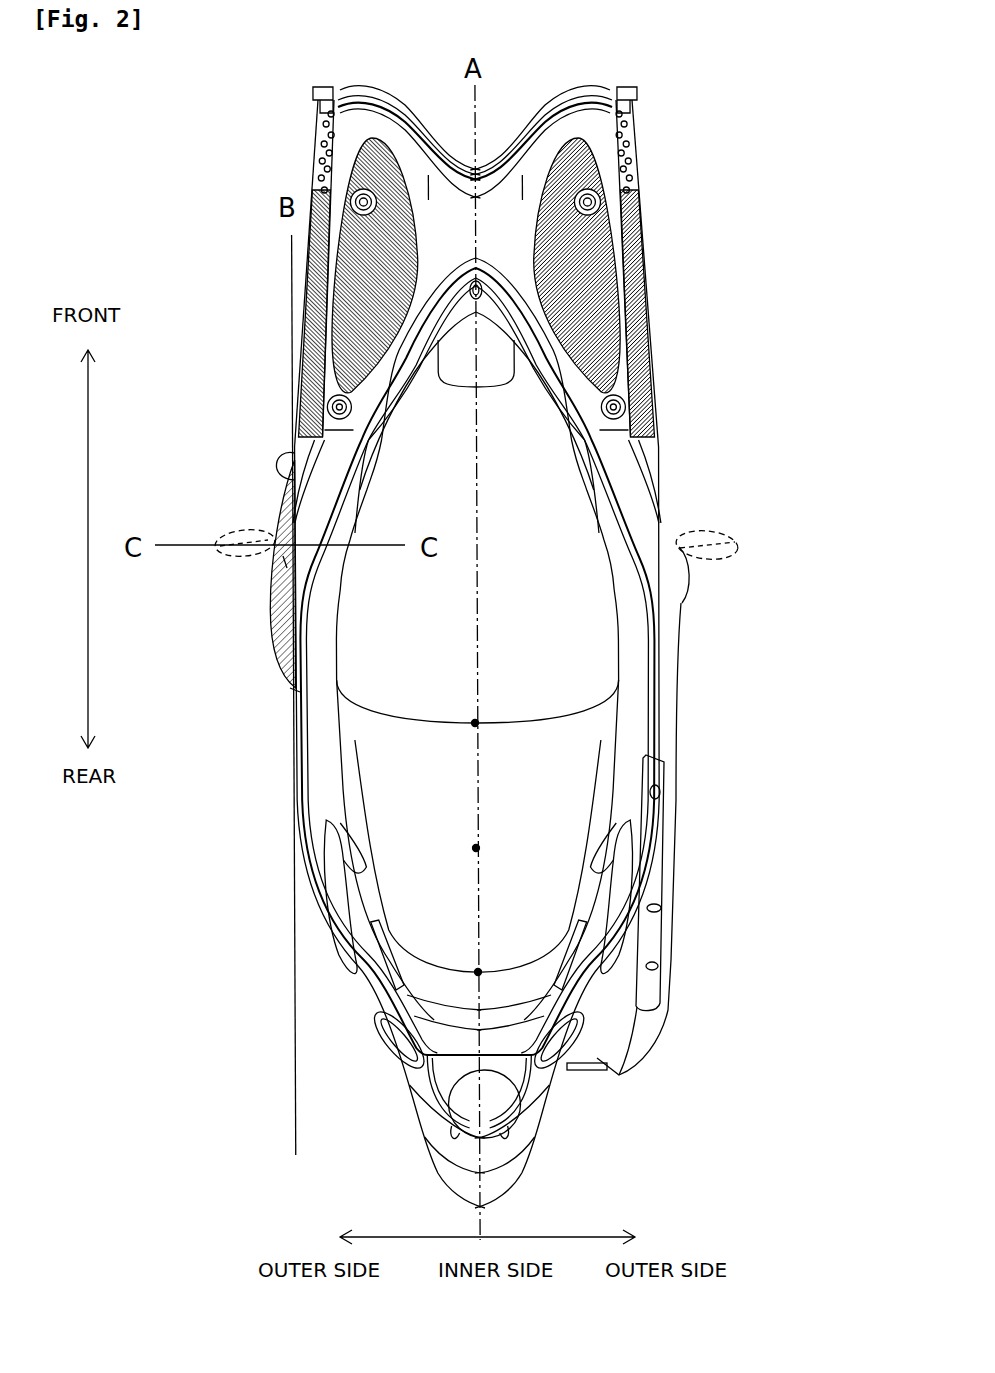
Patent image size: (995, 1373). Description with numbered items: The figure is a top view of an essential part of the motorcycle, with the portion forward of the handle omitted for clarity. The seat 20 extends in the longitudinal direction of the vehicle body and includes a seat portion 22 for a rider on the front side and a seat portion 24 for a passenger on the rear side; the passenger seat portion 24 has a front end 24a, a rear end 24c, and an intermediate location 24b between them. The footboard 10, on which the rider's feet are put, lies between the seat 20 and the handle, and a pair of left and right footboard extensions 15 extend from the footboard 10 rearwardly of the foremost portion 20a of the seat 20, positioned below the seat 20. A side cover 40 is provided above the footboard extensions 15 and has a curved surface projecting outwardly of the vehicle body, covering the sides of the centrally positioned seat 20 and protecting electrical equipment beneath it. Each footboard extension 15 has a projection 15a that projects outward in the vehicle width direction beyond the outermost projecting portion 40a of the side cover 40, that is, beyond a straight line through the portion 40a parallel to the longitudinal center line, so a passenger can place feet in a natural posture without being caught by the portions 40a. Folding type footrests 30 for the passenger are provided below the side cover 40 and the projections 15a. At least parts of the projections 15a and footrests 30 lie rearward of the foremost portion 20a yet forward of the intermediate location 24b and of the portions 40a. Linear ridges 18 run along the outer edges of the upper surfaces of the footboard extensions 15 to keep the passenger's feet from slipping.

The footboard 10 is at (640, 270).
The footboard extensions 15 is at (634, 492).
The projection 15a is at (283, 560).
The linear ridges 18 is at (277, 627).
The seat 20 is at (604, 644).
The foremost portion of seat 20a is at (475, 342).
The seat portion for a rider 22 is at (562, 628).
The seat portion for a passenger 24 is at (562, 758).
The front end of passenger seat portion 24a is at (475, 723).
The intermediate location of passenger seat portion 24b is at (476, 848).
The rear end of passenger seat portion 24c is at (478, 972).
The folding type footrests 30 is at (230, 537).
The side cover 40 is at (327, 788).
The outermost projecting portion of side cover 40a is at (290, 692).